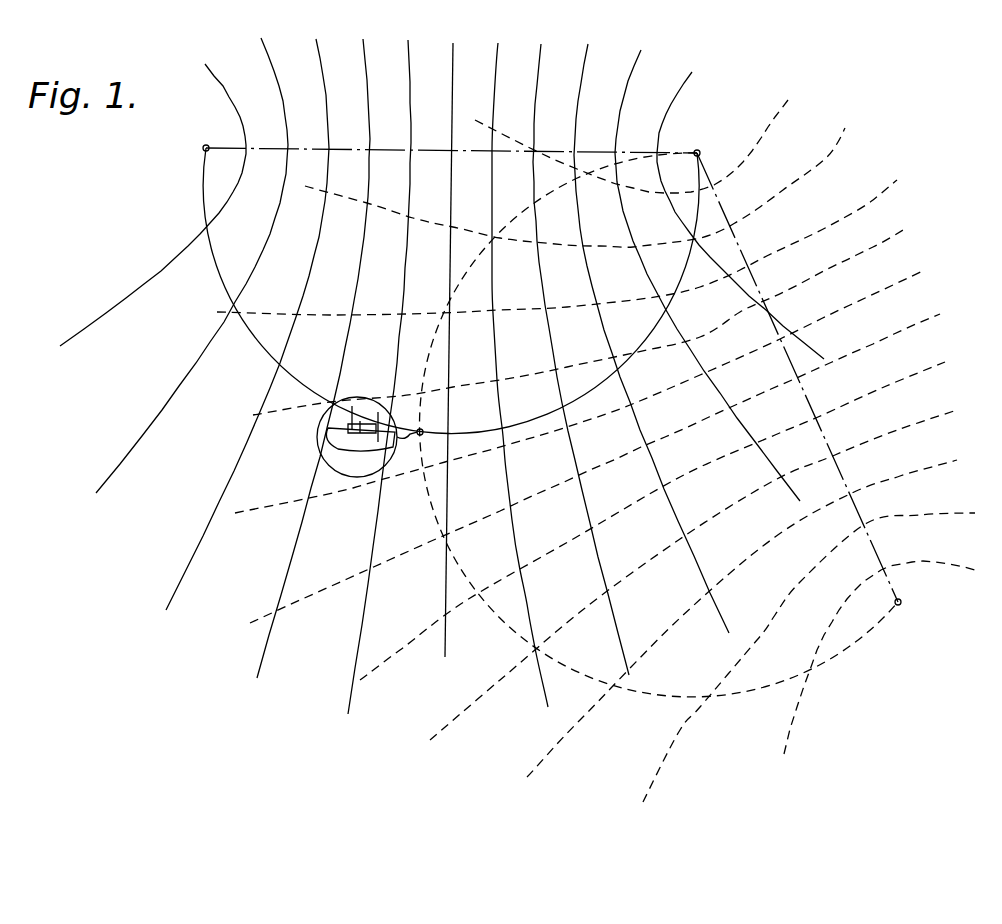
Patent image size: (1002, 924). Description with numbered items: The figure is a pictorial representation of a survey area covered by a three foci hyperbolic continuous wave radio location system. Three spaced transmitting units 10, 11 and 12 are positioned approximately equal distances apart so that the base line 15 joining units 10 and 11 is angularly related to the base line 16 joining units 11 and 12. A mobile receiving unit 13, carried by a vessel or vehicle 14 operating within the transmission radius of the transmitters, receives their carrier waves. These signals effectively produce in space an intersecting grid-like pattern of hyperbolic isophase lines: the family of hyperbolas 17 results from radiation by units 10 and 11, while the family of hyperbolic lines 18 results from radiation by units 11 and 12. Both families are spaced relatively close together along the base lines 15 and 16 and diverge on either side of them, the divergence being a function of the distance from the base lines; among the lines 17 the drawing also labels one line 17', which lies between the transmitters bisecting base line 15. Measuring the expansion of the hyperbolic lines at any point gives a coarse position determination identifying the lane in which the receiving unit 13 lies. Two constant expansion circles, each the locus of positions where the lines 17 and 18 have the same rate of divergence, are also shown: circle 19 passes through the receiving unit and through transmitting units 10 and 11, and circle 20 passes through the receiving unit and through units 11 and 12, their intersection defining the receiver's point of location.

The transmitting unit 10 is at (206, 146).
The transmitting unit 11 is at (699, 151).
The transmitting unit 12 is at (901, 602).
The mobile receiving unit 13 is at (367, 448).
The vessel or vehicle 14 is at (355, 452).
The base line 15 is at (223, 151).
The base line 16 is at (877, 553).
The family of hyperbolic isophase lines 17 is at (442, 376).
The central hyperbolic line of position 17' is at (416, 350).
The family of hyperbolic isophase lines 18 is at (565, 270).
The constant expansion circle 19 is at (627, 362).
The constant expansion circle 20 is at (733, 697).